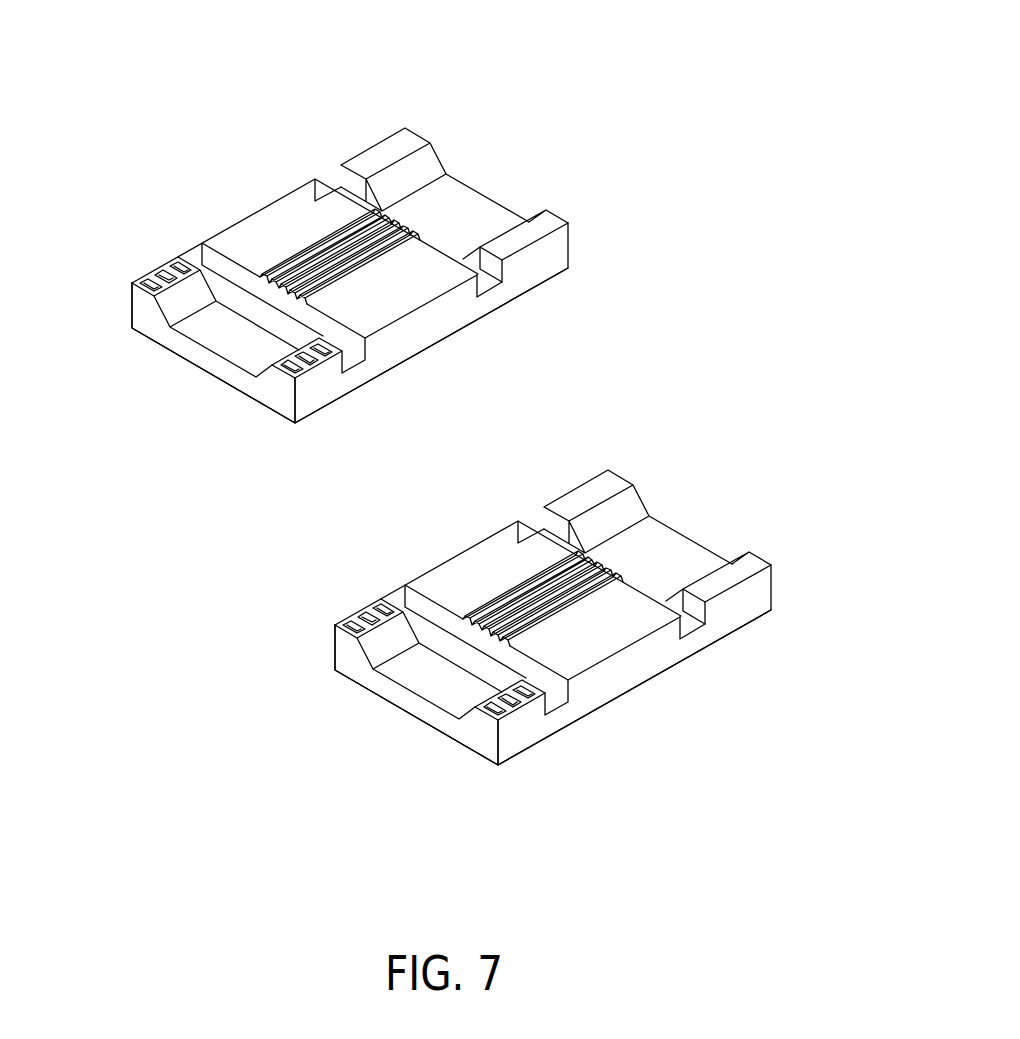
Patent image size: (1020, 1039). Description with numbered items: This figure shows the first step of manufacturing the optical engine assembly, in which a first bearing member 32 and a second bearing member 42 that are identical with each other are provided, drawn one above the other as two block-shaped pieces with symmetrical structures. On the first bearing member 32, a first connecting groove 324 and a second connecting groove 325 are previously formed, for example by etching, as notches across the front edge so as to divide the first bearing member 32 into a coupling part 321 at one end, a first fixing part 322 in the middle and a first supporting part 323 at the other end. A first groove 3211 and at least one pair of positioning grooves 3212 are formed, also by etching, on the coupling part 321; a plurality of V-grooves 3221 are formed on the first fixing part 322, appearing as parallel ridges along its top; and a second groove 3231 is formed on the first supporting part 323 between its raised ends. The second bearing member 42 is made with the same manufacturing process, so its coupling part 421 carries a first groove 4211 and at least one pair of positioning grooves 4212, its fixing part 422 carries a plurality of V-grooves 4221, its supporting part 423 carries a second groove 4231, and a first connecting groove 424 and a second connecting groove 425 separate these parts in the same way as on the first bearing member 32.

The first bearing member 32 is at (551, 72).
The coupling part 321 is at (314, 388).
The first groove 3211 is at (205, 330).
The positioning grooves 3212 is at (284, 362).
The first fixing part 322 is at (422, 332).
The V-grooves 3221 is at (295, 258).
The first supporting part 323 is at (552, 258).
The second groove 3231 is at (480, 204).
The first connecting groove 324 is at (354, 362).
The second connecting groove 325 is at (482, 278).
The second bearing member 42 is at (571, 570).
The coupling part 421 is at (553, 713).
The first groove 4211 is at (391, 667).
The positioning grooves 4212 is at (458, 739).
The fixing part 422 is at (529, 632).
The V-grooves 4221 is at (516, 567).
The supporting part 423 is at (757, 616).
The second groove 4231 is at (661, 517).
The first connecting groove 424 is at (599, 724).
The second connecting groove 425 is at (732, 655).